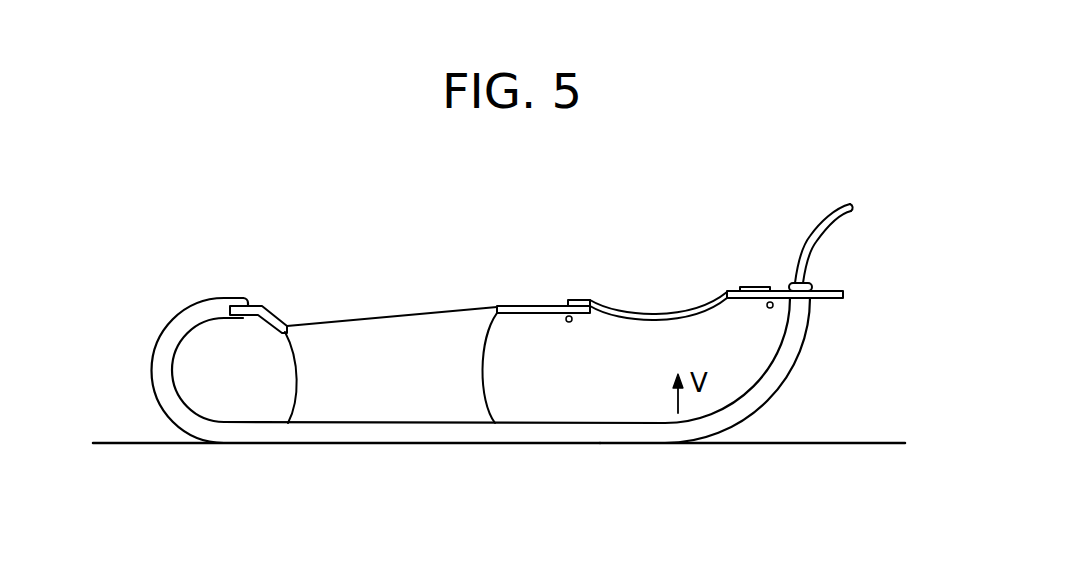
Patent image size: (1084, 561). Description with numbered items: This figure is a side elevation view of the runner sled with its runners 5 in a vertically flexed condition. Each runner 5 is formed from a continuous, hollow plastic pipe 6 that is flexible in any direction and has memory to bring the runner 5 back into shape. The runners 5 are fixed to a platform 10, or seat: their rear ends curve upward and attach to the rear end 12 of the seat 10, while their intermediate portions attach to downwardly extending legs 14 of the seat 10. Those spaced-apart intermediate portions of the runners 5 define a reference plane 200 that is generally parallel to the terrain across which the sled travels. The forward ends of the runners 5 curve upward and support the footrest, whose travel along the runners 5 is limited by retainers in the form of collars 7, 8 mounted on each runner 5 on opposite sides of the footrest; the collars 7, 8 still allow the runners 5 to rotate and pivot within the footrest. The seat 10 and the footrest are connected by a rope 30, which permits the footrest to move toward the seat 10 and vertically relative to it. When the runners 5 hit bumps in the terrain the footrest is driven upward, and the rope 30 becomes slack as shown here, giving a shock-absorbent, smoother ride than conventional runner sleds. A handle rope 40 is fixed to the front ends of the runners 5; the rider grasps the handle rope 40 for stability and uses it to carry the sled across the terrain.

The hollow plastic pipe 6 is at (148, 302).
The rear end of the seat 12 is at (224, 302).
The platform 10 is at (459, 306).
The downwardly extending legs 14 is at (481, 372).
The rope 30 is at (708, 298).
The collar 8 is at (812, 300).
The collar 7 is at (812, 286).
The handle rope 40 is at (813, 214).
The runner 5 is at (405, 444).
The reference plane 200 is at (790, 444).